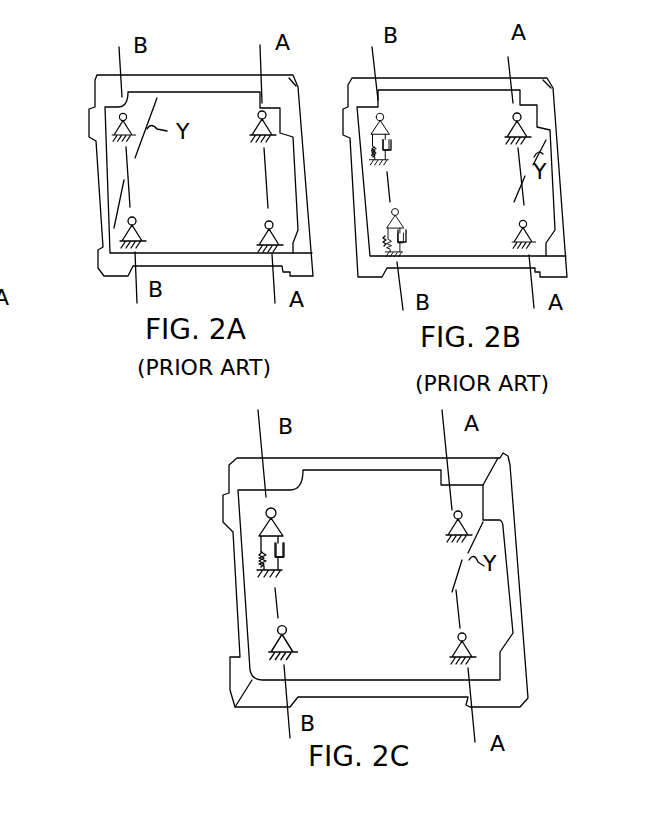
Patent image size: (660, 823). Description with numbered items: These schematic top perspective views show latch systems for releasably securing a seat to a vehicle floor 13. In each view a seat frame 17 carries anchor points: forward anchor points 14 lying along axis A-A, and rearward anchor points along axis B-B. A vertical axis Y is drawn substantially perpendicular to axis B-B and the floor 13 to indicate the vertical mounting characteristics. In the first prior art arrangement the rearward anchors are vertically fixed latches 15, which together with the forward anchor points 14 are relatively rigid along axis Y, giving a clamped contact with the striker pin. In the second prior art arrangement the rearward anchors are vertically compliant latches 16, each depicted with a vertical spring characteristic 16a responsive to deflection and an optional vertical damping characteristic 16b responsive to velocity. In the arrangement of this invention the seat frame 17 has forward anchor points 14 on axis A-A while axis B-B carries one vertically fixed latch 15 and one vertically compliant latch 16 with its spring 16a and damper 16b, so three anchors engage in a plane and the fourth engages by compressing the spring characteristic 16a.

In FIG. 2A, the floor 13 is at (195, 178).
In FIG. 2B, the floor 13 is at (462, 167).
In FIG. 2C, the floor 13 is at (385, 596).
In FIG. 2A, the forward anchor points 14 is at (254, 152).
In FIG. 2B, the forward anchor points 14 is at (514, 150).
In FIG. 2C, the forward anchor points 14 is at (442, 523).
In FIG. 2A, the vertically fixed latches 15 is at (113, 129).
In FIG. 2C, the vertically fixed latches 15 is at (298, 637).
In FIG. 2B, the vertically compliant latches 16 is at (398, 125).
In FIG. 2C, the vertically compliant latches 16 is at (293, 534).
In FIG. 2B, the vertical spring characteristic 16a is at (373, 147).
In FIG. 2C, the vertical spring characteristic 16a is at (262, 552).
In FIG. 2B, the vertical damping characteristic 16b is at (397, 149).
In FIG. 2C, the vertical damping characteristic 16b is at (287, 556).
In FIG. 2A, the seat frame 17 is at (203, 73).
In FIG. 2B, the seat frame 17 is at (550, 108).
In FIG. 2C, the seat frame 17 is at (513, 508).